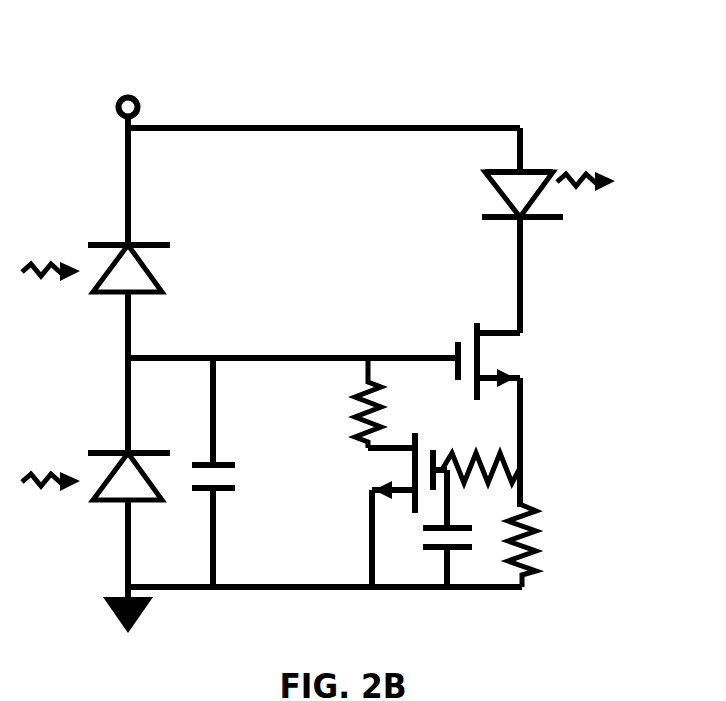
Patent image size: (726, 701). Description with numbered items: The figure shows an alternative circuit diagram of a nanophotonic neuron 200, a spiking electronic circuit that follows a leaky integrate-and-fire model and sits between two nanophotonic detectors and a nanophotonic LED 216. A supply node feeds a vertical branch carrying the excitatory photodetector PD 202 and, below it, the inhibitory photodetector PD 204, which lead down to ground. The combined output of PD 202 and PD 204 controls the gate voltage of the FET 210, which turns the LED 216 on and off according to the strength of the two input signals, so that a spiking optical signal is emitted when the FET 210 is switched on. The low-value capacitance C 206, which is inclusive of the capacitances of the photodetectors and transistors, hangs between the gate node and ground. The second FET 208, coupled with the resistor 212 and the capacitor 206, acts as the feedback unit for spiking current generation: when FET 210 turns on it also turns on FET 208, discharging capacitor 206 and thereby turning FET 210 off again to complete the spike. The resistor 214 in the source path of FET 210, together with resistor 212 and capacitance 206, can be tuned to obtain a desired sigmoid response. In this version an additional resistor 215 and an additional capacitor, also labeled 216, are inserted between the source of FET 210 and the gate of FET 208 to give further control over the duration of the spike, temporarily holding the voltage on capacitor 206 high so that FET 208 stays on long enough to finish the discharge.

The nanophotonic neuron 200 is at (298, 70).
The PD 202 is at (148, 266).
The PD 204 is at (124, 505).
The capacitance C 206 is at (233, 472).
The FET 208 is at (385, 510).
The FET 210 is at (514, 361).
The resistor 212 is at (346, 403).
The resistor 214 is at (545, 546).
The additional resistor 215 is at (481, 447).
The LED 216 is at (474, 357).